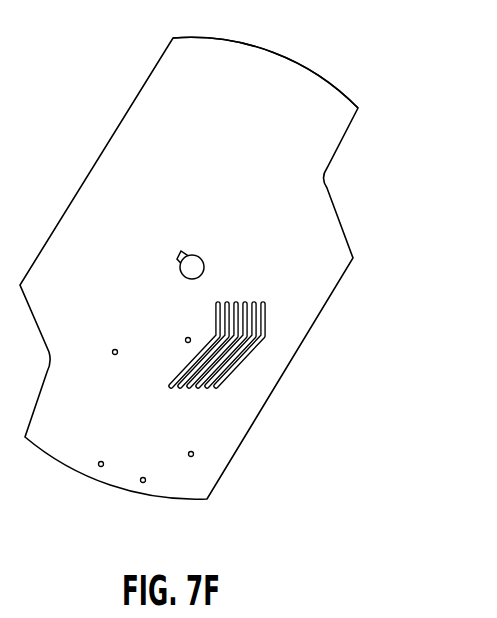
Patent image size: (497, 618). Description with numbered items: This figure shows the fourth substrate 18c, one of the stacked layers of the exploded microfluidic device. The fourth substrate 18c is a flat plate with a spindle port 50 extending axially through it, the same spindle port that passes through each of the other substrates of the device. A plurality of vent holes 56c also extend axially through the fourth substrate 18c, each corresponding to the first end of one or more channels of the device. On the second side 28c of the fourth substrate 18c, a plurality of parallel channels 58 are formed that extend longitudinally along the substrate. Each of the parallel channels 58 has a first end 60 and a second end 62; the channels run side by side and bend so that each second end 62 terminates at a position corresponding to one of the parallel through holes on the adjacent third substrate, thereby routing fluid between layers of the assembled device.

The fourth substrate 18c is at (339, 215).
The second side 28c is at (288, 83).
The spindle port 50 is at (197, 260).
The vent holes 56c is at (100, 468).
The parallel channels 58 is at (262, 345).
The first end 60 is at (238, 300).
The second end 62 is at (215, 390).